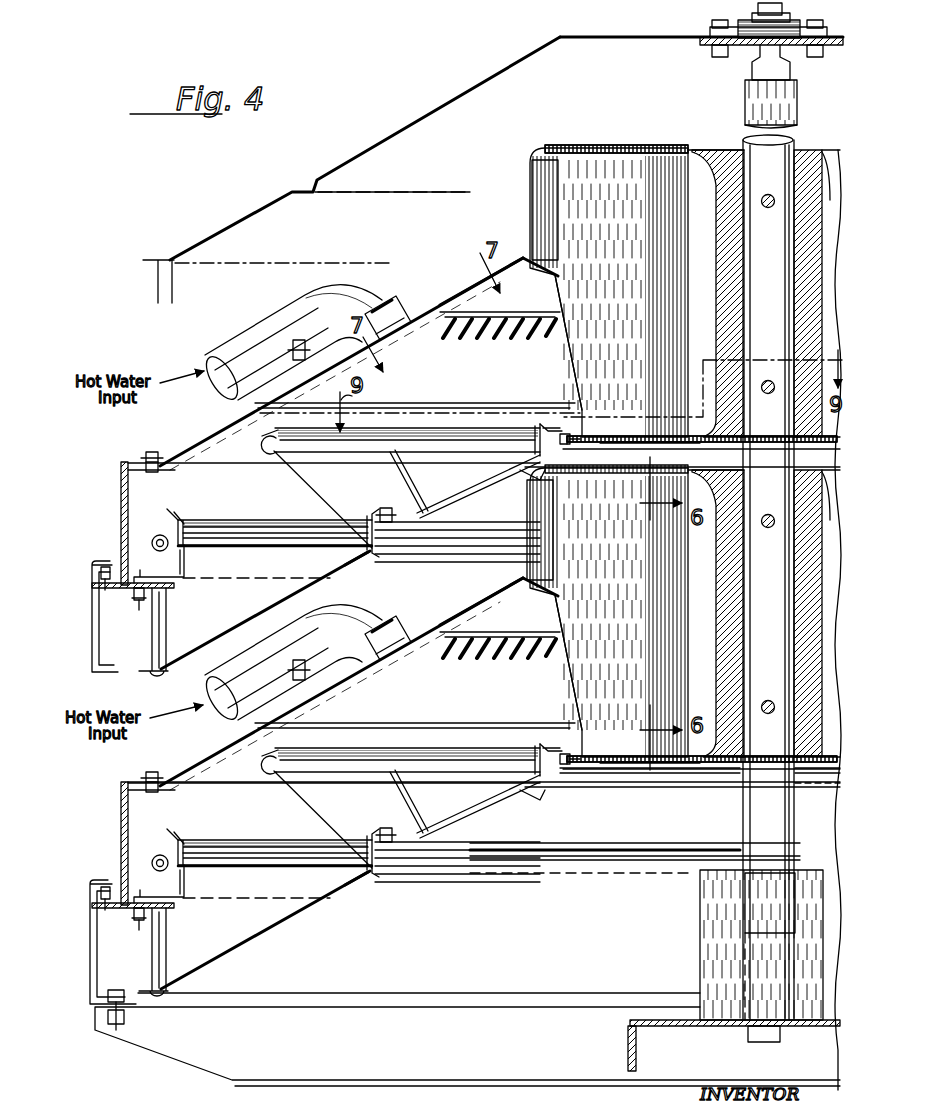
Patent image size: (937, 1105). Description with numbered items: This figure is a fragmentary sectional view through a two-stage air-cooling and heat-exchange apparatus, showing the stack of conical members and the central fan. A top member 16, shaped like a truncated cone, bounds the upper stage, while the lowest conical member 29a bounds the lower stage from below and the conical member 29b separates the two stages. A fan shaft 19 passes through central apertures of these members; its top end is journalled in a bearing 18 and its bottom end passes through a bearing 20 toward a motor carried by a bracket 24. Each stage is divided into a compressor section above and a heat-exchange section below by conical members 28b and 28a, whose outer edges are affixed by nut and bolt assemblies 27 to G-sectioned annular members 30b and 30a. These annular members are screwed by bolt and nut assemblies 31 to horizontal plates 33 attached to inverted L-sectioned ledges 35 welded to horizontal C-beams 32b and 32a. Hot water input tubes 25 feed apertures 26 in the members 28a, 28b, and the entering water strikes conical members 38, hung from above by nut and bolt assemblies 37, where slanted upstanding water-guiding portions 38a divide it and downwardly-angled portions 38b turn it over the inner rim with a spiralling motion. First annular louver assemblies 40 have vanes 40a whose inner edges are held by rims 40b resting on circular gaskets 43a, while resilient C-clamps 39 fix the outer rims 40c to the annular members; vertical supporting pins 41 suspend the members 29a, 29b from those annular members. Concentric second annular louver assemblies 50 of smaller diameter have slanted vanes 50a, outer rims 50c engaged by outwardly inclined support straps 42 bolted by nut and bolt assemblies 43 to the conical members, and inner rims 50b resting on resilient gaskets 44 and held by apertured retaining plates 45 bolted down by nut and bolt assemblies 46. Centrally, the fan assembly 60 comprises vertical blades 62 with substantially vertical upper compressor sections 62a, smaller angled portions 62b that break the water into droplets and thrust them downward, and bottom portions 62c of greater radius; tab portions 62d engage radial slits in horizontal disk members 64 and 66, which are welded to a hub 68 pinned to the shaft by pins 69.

The top member 16 is at (400, 127).
The bearing 18 is at (745, 22).
The fan shaft 19 is at (745, 802).
The bearing 20 is at (700, 930).
The bracket 24 is at (628, 1048).
The hot water input tubes 25 is at (275, 324).
The apertures 26 is at (392, 340).
The nut and bolt assemblies 27 is at (158, 470).
The conical member 28a is at (205, 760).
The conical member 28b is at (200, 442).
The conical member 29a is at (240, 940).
The conical member 29b is at (245, 624).
The annular member 30a is at (121, 822).
The annular member 30b is at (121, 495).
The bolt and nut assemblies 31 is at (146, 572).
The beam 32a is at (90, 935).
The beam 32b is at (90, 620).
The horizontal plates 33 is at (140, 602).
The ledges 35 is at (104, 598).
The nut and bolt assemblies 37 is at (295, 345).
The conical member 38 is at (530, 320).
The water-guiding portions 38a is at (462, 297).
The downwardly-angled portions 38b is at (526, 262).
The C-clamps 39 is at (156, 538).
The first annular louver assemblies 40 is at (225, 530).
The vanes 40a is at (288, 530).
The rims 40b is at (368, 522).
The outer rims 40c is at (170, 512).
The supporting pins 41 is at (155, 645).
The support straps 42 is at (405, 480).
The nut and bolt assemblies 43 is at (393, 498).
The circular gaskets 43a is at (350, 558).
The resilient gaskets 44 is at (530, 478).
The retaining plates 45 is at (545, 428).
The nut and bolt assemblies 46 is at (565, 444).
The second annular louver assemblies 50 is at (470, 428).
The vanes 50a is at (460, 484).
The inner rims 50b is at (538, 426).
The outer rims 50c is at (260, 443).
The fan assembly 60 is at (548, 162).
The blades 62 is at (614, 328).
The upper compressor sections 62a is at (553, 185).
The angled portions 62b is at (605, 355).
The bottom portions 62c is at (582, 435).
The tab portions 62d is at (672, 148).
The disk member 64 is at (570, 146).
The disk member 66 is at (630, 437).
The hub 68 is at (735, 275).
The pins 69 is at (772, 196).